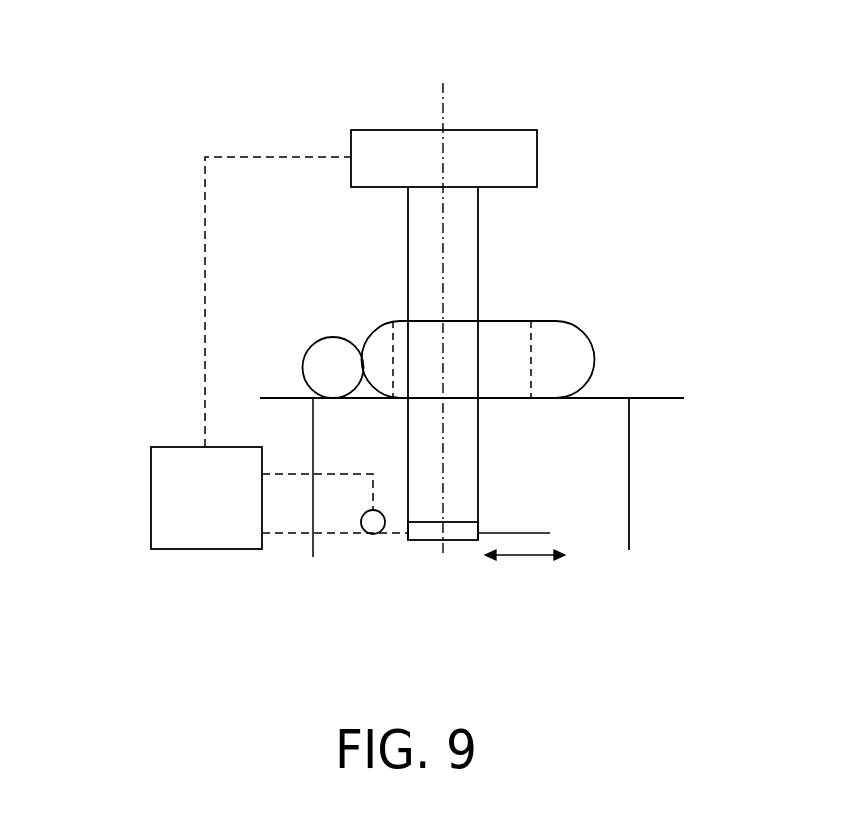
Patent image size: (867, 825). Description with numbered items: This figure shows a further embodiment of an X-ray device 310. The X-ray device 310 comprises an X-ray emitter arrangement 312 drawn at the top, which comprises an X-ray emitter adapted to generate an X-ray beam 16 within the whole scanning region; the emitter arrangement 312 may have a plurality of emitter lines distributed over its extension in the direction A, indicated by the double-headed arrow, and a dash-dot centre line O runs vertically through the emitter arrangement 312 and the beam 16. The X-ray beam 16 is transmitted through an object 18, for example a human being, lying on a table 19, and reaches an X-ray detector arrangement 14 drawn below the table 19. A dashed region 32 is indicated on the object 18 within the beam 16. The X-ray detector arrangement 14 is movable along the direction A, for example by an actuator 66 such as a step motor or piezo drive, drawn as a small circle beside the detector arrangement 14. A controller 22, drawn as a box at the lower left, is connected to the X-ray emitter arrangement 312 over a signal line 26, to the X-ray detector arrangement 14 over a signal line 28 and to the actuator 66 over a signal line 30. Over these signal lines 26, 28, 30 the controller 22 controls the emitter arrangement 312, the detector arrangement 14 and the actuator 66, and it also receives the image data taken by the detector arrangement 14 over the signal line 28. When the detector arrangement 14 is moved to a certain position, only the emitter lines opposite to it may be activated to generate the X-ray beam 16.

The X-ray device 310 is at (148, 104).
The X-ray emitter arrangement 312 is at (537, 152).
The X-ray beam 16 is at (418, 272).
The X-ray detector arrangement 14 is at (432, 541).
The object 18 is at (583, 355).
The imaging region 32 is at (515, 325).
The table 19 is at (673, 400).
The controller 22 is at (150, 488).
The signal line 26 is at (205, 270).
The signal line 30 is at (285, 474).
The actuator 66 is at (373, 535).
The signal line 28 is at (285, 535).
The axis O is at (444, 85).
The direction A is at (525, 569).